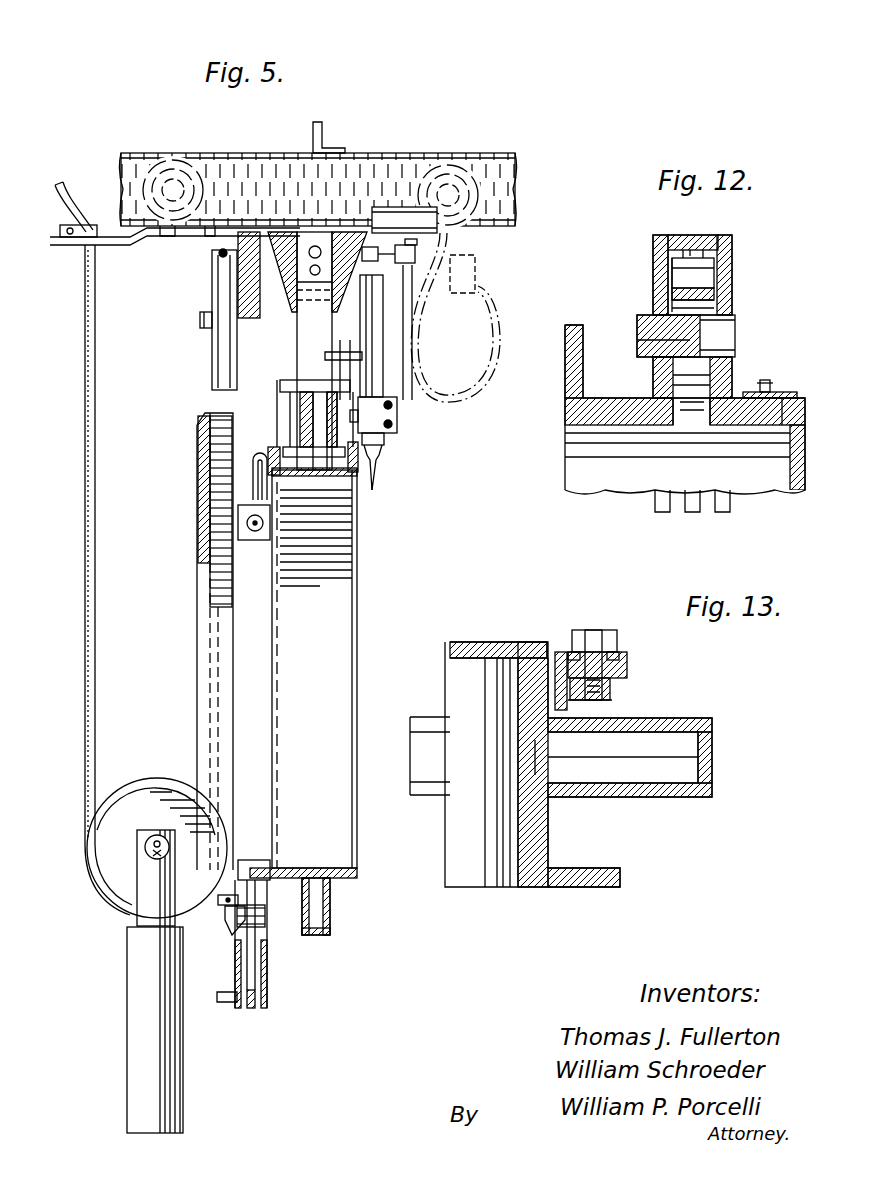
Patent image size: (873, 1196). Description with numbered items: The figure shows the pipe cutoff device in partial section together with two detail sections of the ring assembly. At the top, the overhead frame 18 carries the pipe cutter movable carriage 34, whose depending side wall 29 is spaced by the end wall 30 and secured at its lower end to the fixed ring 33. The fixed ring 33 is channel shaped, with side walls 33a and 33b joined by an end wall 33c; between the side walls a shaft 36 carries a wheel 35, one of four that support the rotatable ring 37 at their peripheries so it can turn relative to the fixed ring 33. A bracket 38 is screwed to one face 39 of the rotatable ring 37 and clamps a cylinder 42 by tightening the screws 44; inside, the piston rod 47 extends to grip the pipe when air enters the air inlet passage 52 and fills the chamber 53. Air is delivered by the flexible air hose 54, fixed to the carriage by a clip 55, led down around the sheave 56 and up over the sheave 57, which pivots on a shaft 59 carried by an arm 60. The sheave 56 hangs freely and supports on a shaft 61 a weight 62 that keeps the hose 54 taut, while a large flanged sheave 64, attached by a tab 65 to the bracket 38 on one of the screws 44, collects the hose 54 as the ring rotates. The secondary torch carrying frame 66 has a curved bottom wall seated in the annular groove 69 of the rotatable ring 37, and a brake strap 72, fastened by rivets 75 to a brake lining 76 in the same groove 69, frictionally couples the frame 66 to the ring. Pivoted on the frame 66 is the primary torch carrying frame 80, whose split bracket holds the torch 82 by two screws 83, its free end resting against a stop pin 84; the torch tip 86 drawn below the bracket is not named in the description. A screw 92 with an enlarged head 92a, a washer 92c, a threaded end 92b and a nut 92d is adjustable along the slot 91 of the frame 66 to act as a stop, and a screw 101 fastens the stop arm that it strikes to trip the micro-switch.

In FIG. 5, the overhead frame 18 is at (380, 170).
In FIG. 5, the side wall 29 is at (296, 330).
In FIG. 5, the end wall 30 is at (326, 336).
In FIG. 5, the fixed ring 33 is at (305, 440).
In FIG. 12, the fixed ring 33 is at (732, 262).
In FIG. 13, the fixed ring 33 is at (712, 745).
In FIG. 12, the side wall 33a is at (660, 274).
In FIG. 12, the side wall 33b is at (732, 275).
In FIG. 12, the end wall 33c is at (700, 250).
In FIG. 5, the pipe cutter movable carriage 34 is at (400, 461).
In FIG. 12, the wheel 35 is at (685, 420).
In FIG. 12, the shaft 36 is at (740, 326).
In FIG. 5, the rotatable ring 37 is at (328, 568).
In FIG. 12, the rotatable ring 37 is at (575, 462).
In FIG. 13, the rotatable ring 37 is at (548, 832).
In FIG. 5, the bracket 38 is at (268, 868).
In FIG. 5, the face 39 is at (272, 665).
In FIG. 5, the cylinder 42 is at (268, 962).
In FIG. 5, the screw 44 is at (226, 922).
In FIG. 5, the piston rod 47 is at (256, 918).
In FIG. 5, the air inlet passage 52 is at (236, 1003).
In FIG. 5, the chamber 53 is at (256, 982).
In FIG. 5, the flexible air hose 54 is at (62, 190).
In FIG. 5, the clip 55 is at (88, 225).
In FIG. 5, the sheave 56 is at (160, 800).
In FIG. 5, the sheave 57 is at (212, 350).
In FIG. 5, the shaft 59 is at (200, 320).
In FIG. 5, the arm 60 is at (255, 300).
In FIG. 5, the shaft 61 is at (150, 852).
In FIG. 5, the weight 62 is at (142, 1005).
In FIG. 5, the flanged sheave 64 is at (215, 545).
In FIG. 5, the tab 65 is at (218, 898).
In FIG. 5, the secondary torch carrying frame 66 is at (355, 470).
In FIG. 13, the secondary torch carrying frame 66 is at (630, 668).
In FIG. 12, the annular groove 69 is at (740, 410).
In FIG. 12, the brake strap 72 is at (780, 395).
In FIG. 12, the rivet 75 is at (764, 380).
In FIG. 12, the brake lining 76 is at (785, 428).
In FIG. 5, the primary torch carrying frame 80 is at (352, 387).
In FIG. 5, the torch 82 is at (372, 338).
In FIG. 5, the screw 83 is at (394, 424).
In FIG. 5, the stop pin 84 is at (350, 370).
In FIG. 5, the nozzle 86 is at (375, 462).
In FIG. 13, the slot 91 is at (595, 640).
In FIG. 13, the screw 92 is at (585, 650).
In FIG. 13, the enlarged head 92a is at (620, 632).
In FIG. 13, the threaded end 92b is at (600, 700).
In FIG. 13, the washer 92c is at (620, 650).
In FIG. 13, the nut 92d is at (612, 686).
In FIG. 5, the screw 101 is at (286, 450).